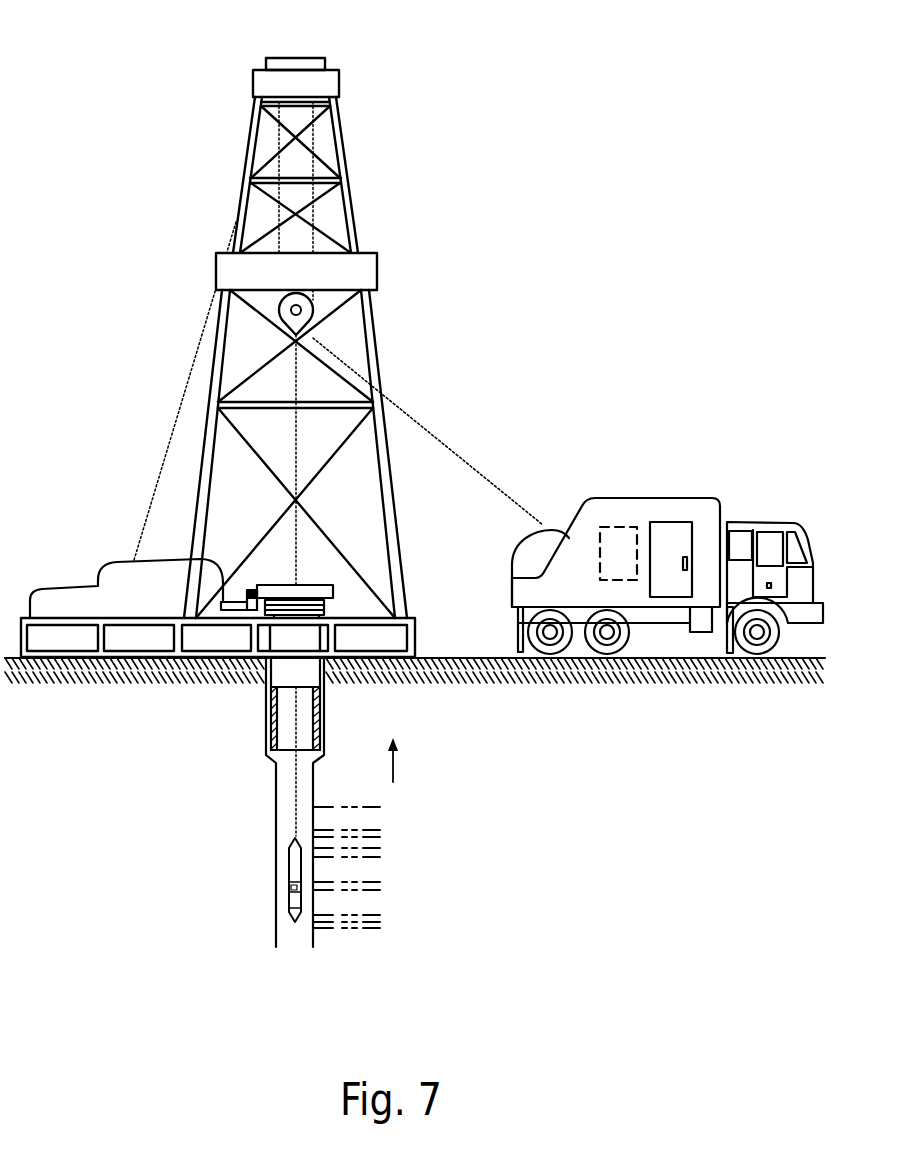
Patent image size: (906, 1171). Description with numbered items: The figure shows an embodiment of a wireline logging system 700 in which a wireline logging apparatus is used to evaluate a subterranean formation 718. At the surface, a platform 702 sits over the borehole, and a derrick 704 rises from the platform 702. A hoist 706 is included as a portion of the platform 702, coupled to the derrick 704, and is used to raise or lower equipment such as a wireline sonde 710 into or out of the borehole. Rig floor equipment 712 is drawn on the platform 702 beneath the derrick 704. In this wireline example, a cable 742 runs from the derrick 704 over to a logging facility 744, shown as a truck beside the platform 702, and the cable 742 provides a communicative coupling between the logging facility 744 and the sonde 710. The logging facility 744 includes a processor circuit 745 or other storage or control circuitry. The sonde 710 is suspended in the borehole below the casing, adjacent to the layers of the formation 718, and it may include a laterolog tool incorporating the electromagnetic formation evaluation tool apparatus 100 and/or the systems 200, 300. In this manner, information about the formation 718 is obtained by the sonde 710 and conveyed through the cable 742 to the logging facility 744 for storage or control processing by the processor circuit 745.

The well system 700 is at (121, 106).
The platform 702 is at (417, 637).
The derrick 704 is at (403, 590).
The hoist 706 is at (313, 307).
The wireline sonde 710 is at (214, 910).
The rig floor equipment / drawworks 712 is at (317, 583).
The formation 718 is at (381, 806).
The cable 742 is at (432, 437).
The logging facility 744 is at (677, 522).
The processor circuit 745 is at (605, 527).
The electromagnetic formation evaluation tool apparatus 100 is at (214, 933).
The system 200 is at (214, 933).
The system 300 is at (284, 888).